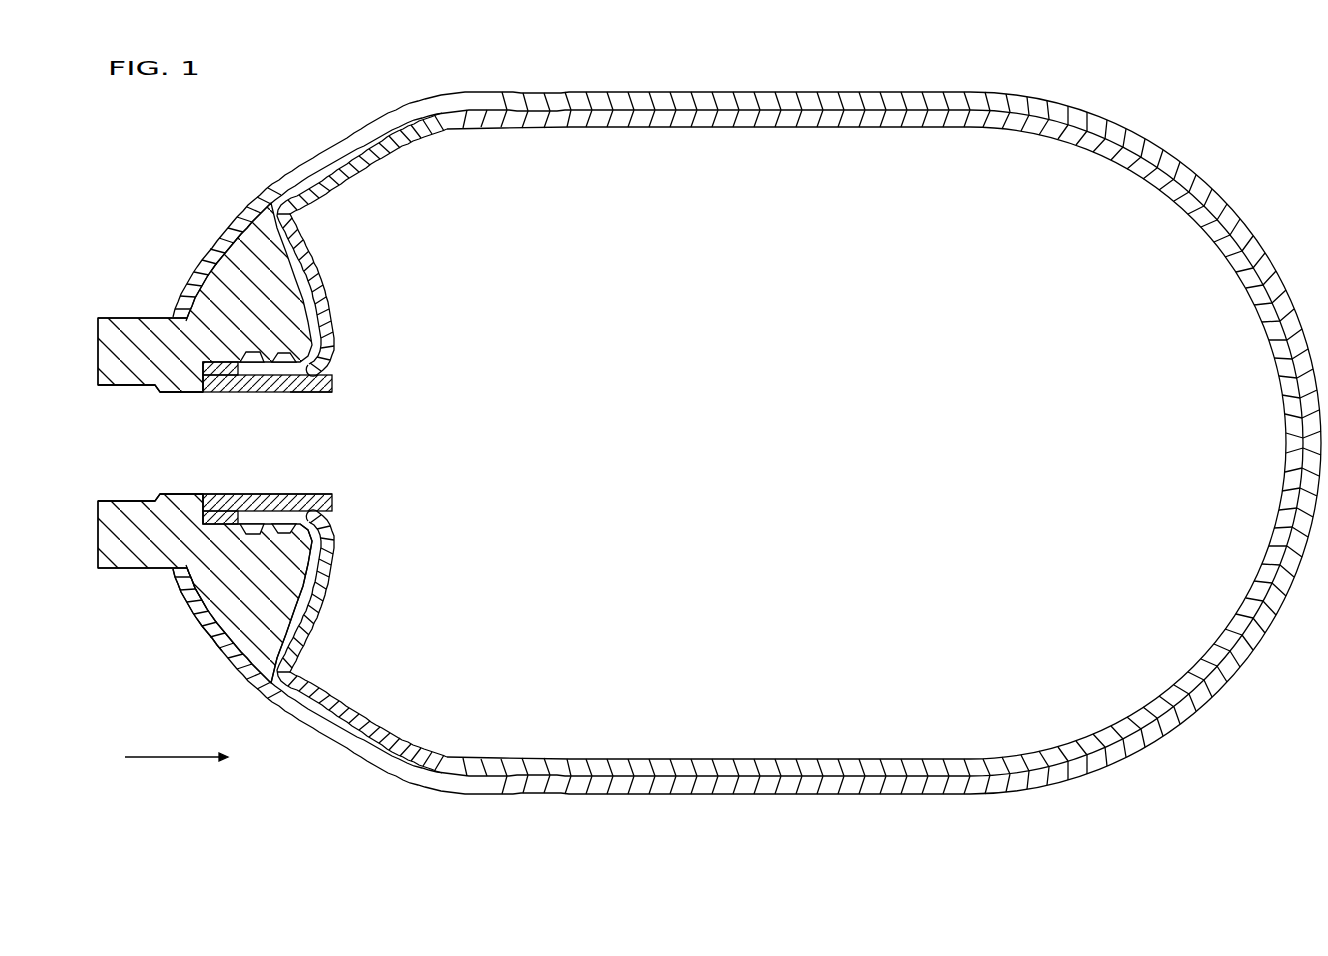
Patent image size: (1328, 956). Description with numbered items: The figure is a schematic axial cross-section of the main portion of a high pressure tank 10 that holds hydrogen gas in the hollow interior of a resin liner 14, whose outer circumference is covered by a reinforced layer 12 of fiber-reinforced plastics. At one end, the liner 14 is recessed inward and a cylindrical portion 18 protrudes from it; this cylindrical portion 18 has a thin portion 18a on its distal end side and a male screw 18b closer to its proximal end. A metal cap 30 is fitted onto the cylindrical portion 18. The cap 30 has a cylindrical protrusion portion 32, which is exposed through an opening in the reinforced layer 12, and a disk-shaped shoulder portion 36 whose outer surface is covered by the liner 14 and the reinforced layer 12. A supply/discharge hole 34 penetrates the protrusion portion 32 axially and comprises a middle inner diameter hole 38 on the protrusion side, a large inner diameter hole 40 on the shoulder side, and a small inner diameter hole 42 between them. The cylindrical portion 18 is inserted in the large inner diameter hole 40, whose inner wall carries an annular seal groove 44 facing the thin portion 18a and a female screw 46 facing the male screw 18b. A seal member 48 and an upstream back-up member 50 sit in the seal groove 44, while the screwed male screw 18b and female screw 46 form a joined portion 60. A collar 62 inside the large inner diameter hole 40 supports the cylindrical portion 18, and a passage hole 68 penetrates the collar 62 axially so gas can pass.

The high pressure tank 10 is at (300, 84).
The reinforced layer 12 is at (286, 175).
The liner 14 is at (357, 160).
The cylindrical portion 18 is at (282, 368).
The thin portion 18a is at (232, 372).
The male screw 18b is at (322, 346).
The cap 30 is at (149, 204).
The protrusion portion 32 is at (161, 336).
The shoulder portion 36 is at (243, 258).
The supply/discharge hole 34 is at (245, 456).
The middle inner diameter hole 38 is at (115, 498).
The small inner diameter hole 42 is at (175, 493).
The large inner diameter hole 40 is at (213, 520).
The seal groove 44 is at (262, 364).
The female screw 46 is at (300, 394).
The seal member 48 is at (212, 614).
The back-up member 50 is at (182, 591).
The joined portion 60 is at (290, 538).
The collar 62 is at (332, 499).
The passage hole 68 is at (307, 494).